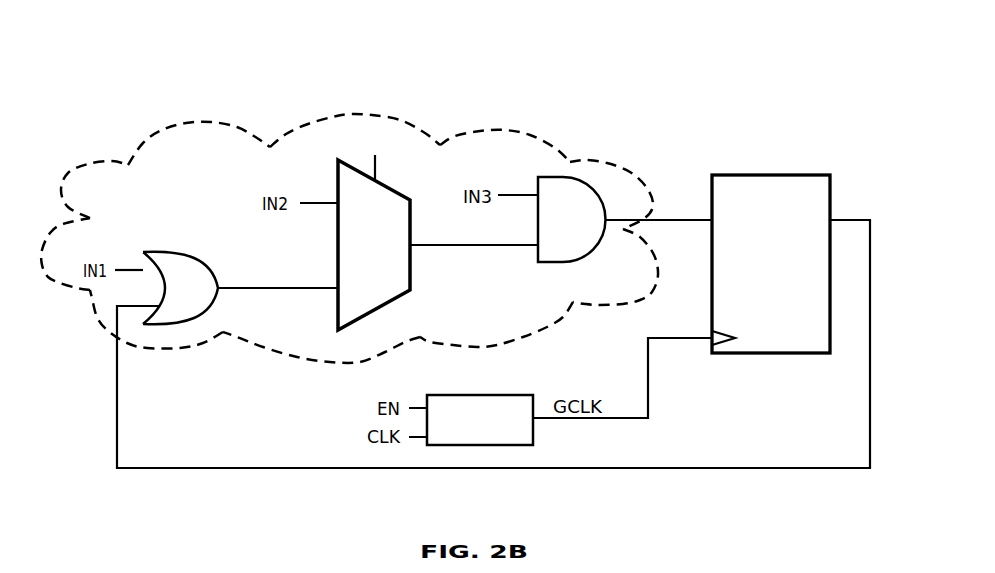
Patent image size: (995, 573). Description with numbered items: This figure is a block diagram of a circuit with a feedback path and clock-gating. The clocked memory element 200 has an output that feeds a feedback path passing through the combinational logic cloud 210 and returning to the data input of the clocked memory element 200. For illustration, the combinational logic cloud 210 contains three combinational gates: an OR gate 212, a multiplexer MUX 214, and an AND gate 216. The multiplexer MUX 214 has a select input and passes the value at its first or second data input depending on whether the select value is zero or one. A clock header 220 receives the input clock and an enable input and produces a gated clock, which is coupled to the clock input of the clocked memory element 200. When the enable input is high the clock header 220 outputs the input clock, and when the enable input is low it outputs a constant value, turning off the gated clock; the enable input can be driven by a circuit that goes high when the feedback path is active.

The combinational logic cloud 210 is at (355, 115).
The OR gate 212 is at (180, 288).
The multiplexer MUX 214 is at (374, 232).
The AND gate 216 is at (572, 219).
The clocked memory element 200 is at (771, 264).
The clock header 220 is at (480, 420).